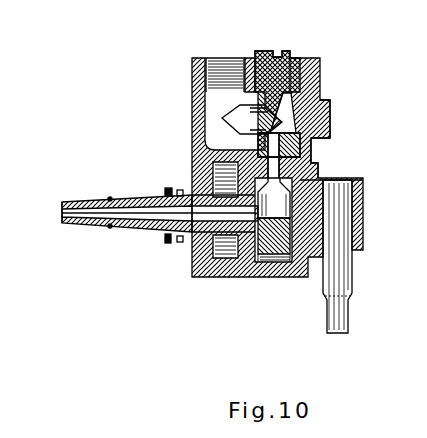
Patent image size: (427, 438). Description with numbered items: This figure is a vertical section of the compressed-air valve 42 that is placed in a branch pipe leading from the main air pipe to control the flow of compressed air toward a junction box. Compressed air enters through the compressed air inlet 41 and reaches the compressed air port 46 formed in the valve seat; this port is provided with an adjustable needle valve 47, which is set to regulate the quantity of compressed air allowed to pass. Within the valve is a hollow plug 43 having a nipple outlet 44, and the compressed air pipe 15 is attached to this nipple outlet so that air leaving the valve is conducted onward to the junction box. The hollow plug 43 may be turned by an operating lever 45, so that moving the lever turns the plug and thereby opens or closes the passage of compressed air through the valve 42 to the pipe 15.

The compressed air inlet 41 is at (213, 57).
The adjustable needle valve 47 is at (291, 55).
The valve 42 is at (192, 149).
The compressed air port 46 is at (331, 138).
The hollow plug 43 is at (312, 168).
The compressed air pipe 15 is at (66, 207).
The nipple outlet 44 is at (132, 229).
The operating lever 45 is at (350, 301).